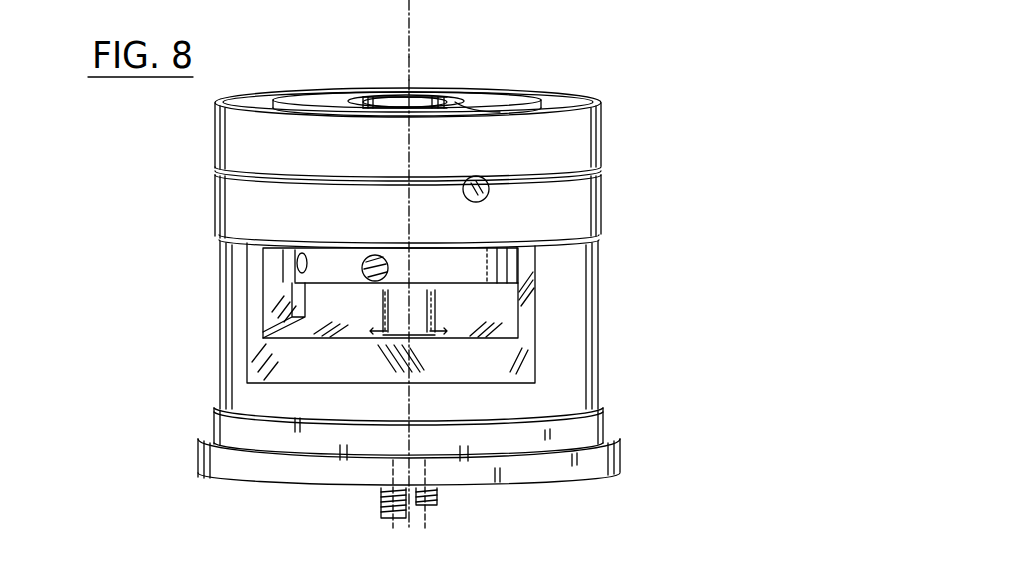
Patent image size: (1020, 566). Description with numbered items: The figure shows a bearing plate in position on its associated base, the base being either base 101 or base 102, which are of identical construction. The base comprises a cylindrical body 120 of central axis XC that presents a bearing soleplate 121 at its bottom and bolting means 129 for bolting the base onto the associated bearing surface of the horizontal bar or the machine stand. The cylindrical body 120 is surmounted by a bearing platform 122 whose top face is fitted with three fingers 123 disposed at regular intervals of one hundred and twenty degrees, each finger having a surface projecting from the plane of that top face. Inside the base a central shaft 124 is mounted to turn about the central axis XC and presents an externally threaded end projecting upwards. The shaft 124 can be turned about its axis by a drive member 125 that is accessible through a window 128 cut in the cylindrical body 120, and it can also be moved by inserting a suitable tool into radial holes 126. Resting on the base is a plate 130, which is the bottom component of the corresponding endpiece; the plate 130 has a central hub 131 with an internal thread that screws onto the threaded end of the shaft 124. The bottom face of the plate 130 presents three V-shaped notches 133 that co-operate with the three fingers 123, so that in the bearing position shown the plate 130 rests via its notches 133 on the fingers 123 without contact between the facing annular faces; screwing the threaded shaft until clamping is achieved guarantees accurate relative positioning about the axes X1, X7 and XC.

The base 101 is at (210, 333).
The base 102 is at (299, 311).
The cylindrical body 120 is at (572, 347).
The bearing soleplate 121 is at (623, 456).
The bearing platform 122 is at (603, 200).
The fingers 123 is at (487, 201).
The central shaft 124 is at (422, 300).
The drive member 125 is at (342, 273).
The radial holes 126 is at (365, 258).
The window 128 is at (490, 288).
The bolting means 129 is at (382, 492).
The plate 130 is at (604, 128).
The central hub 131 is at (447, 87).
The V-shaped notches 133 is at (481, 176).
The central axis XC is at (409, 78).
The axis X1 is at (410, 57).
The axis X7 is at (467, 47).